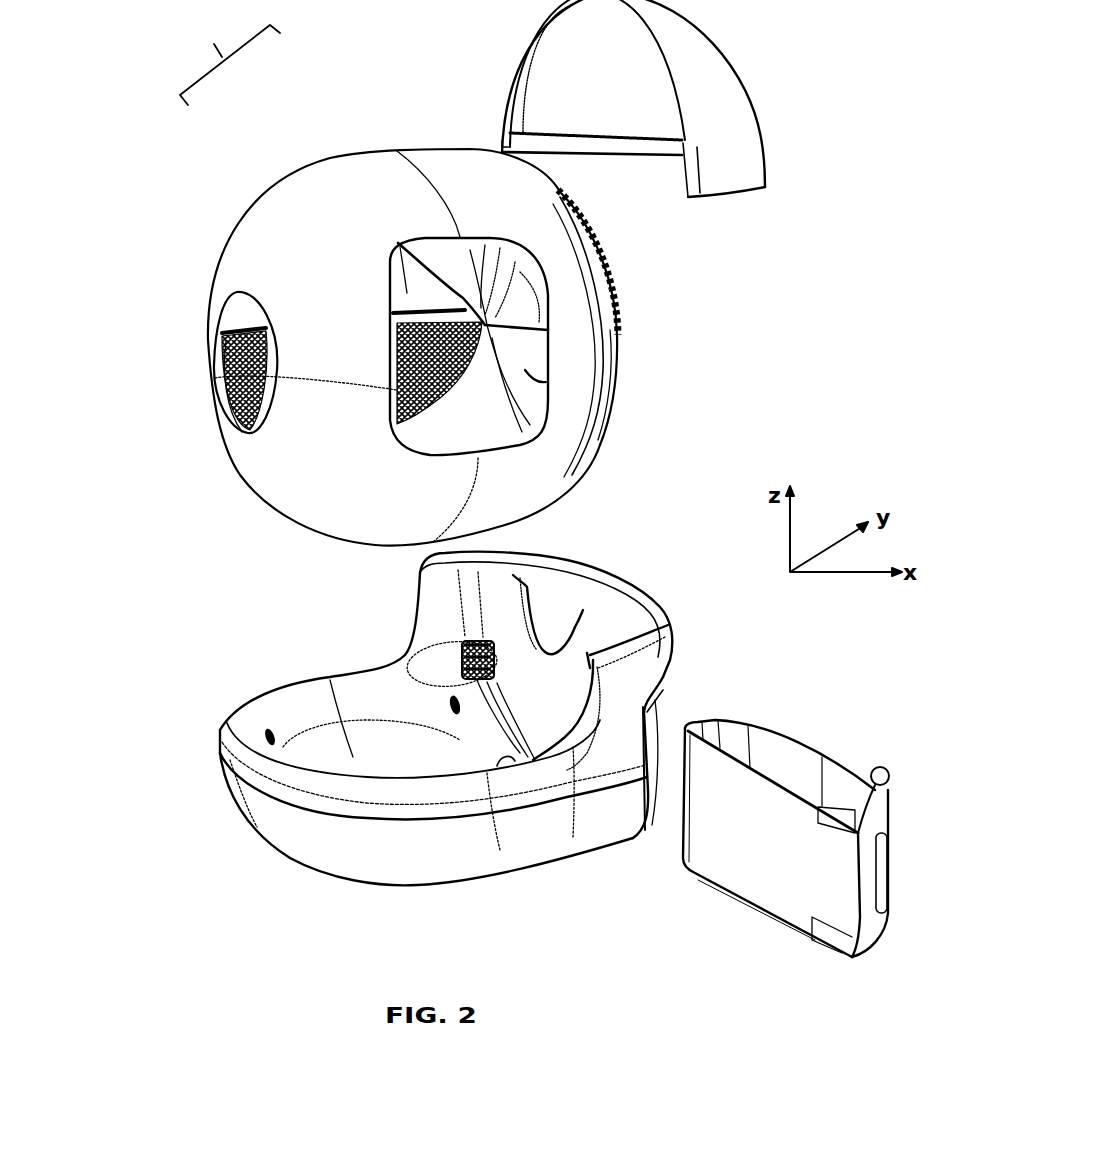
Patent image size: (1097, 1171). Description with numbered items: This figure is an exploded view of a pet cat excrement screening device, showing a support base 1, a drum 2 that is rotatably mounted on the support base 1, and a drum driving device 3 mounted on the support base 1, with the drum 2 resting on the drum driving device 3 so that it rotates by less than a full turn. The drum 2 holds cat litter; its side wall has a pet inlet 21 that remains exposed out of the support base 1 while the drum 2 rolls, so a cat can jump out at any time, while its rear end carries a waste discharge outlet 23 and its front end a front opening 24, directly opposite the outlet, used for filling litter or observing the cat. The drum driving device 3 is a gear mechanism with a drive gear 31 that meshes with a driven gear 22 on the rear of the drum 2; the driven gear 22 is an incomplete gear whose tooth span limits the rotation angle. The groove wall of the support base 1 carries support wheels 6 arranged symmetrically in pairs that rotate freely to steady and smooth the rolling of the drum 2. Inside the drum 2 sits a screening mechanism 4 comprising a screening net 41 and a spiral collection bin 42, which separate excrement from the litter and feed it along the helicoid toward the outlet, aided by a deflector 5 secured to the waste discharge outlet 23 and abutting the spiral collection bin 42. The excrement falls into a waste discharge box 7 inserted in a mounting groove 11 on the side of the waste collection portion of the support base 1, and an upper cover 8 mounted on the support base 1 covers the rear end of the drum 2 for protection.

The support base 1 is at (338, 847).
The drum 2 is at (303, 478).
The drum driving device 3 is at (462, 658).
The screening mechanism 4 is at (364, 220).
The deflector 5 is at (487, 325).
The support wheels 6 is at (450, 712).
The waste discharge box 7 is at (725, 830).
The upper cover 8 is at (710, 107).
The mounting groove 11 is at (663, 713).
The pet inlet 21 is at (490, 435).
The driven gear 22 is at (620, 297).
The waste discharge outlet 23 is at (548, 330).
The front opening 24 is at (215, 378).
The drive gear 31 is at (493, 647).
The screening net 41 is at (390, 302).
The spiral collection bin 42 is at (393, 298).